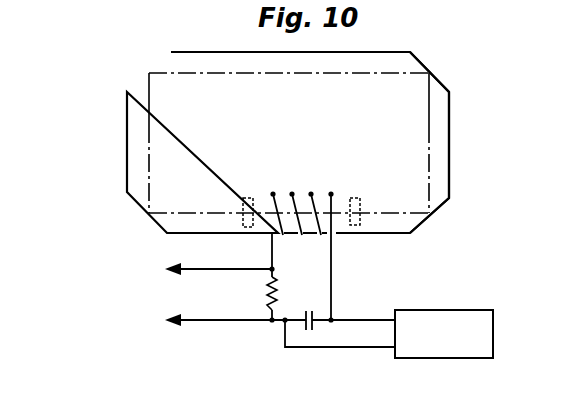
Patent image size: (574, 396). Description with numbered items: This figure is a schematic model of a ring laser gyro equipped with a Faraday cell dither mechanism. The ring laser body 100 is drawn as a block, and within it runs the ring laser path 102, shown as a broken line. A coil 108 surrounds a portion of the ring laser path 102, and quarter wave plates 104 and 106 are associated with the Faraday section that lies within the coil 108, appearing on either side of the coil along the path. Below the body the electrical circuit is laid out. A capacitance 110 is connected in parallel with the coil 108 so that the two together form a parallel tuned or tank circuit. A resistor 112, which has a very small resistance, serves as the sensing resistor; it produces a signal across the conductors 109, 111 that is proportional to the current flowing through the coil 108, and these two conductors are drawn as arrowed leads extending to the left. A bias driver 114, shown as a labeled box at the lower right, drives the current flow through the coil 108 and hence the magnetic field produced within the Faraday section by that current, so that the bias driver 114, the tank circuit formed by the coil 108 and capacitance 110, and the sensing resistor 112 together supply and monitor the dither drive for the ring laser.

The ring laser body 100 is at (132, 143).
The ring laser path 102 is at (428, 128).
The quarter wave plate 104 is at (243, 228).
The quarter wave plate 106 is at (356, 227).
The coil 108 is at (302, 237).
The conductor 109 is at (198, 272).
The capacitance 110 is at (314, 326).
The conductor 111 is at (195, 323).
The resistor 112 is at (266, 289).
The bias driver 114 is at (452, 310).